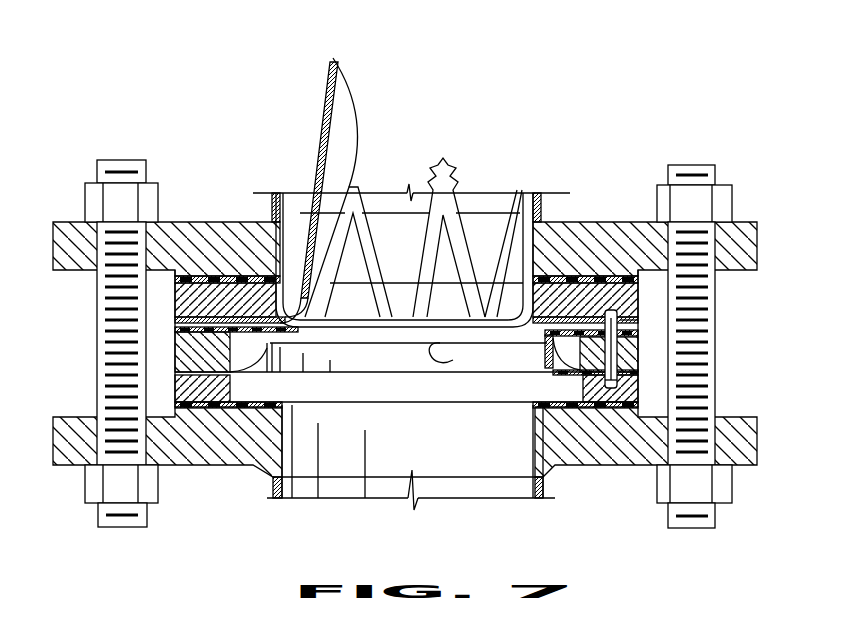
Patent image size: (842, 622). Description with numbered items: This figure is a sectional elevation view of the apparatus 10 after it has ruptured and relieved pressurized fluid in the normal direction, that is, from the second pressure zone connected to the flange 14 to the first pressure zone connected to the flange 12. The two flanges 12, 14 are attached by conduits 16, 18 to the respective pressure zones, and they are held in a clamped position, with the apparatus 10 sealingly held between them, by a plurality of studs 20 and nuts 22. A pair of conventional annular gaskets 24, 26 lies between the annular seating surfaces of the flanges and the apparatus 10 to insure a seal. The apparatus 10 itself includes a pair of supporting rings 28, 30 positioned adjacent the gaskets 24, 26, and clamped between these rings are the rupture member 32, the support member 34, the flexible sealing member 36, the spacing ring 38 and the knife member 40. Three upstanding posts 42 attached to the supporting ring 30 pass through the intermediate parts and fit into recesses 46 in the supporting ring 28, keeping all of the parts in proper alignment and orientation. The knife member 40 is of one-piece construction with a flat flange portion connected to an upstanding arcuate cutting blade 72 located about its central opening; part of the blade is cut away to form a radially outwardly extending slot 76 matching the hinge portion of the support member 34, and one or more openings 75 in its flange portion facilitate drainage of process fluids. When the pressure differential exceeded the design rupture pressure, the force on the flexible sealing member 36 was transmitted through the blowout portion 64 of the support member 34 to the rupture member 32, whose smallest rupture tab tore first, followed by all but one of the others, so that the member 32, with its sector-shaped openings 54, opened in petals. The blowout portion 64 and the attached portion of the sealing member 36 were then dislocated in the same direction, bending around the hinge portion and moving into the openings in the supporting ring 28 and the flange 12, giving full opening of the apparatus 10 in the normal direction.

The apparatus 10 is at (168, 344).
The flange 12 is at (192, 236).
The flange 14 is at (213, 452).
The conduit 16 is at (541, 211).
The conduit 18 is at (274, 484).
The stud 20 is at (115, 528).
The nut 22 is at (135, 200).
The annular gasket 24 is at (175, 283).
The annular gasket 26 is at (175, 408).
The supporting ring 28 is at (175, 300).
The supporting ring 30 is at (175, 384).
The rupture member 32 is at (547, 242).
The support member 34 is at (330, 60).
The flexible sealing member 36 is at (346, 118).
The spacing ring 38 is at (640, 352).
The knife member 40 is at (387, 364).
The upstanding post 42 is at (614, 388).
The recess 46 is at (648, 318).
The sector-shaped opening 54 is at (355, 248).
The blowout portion 64 is at (320, 98).
The arcuate cutting blade 72 is at (453, 357).
The opening 75 is at (558, 374).
The radially outwardly extending slot 76 is at (270, 374).